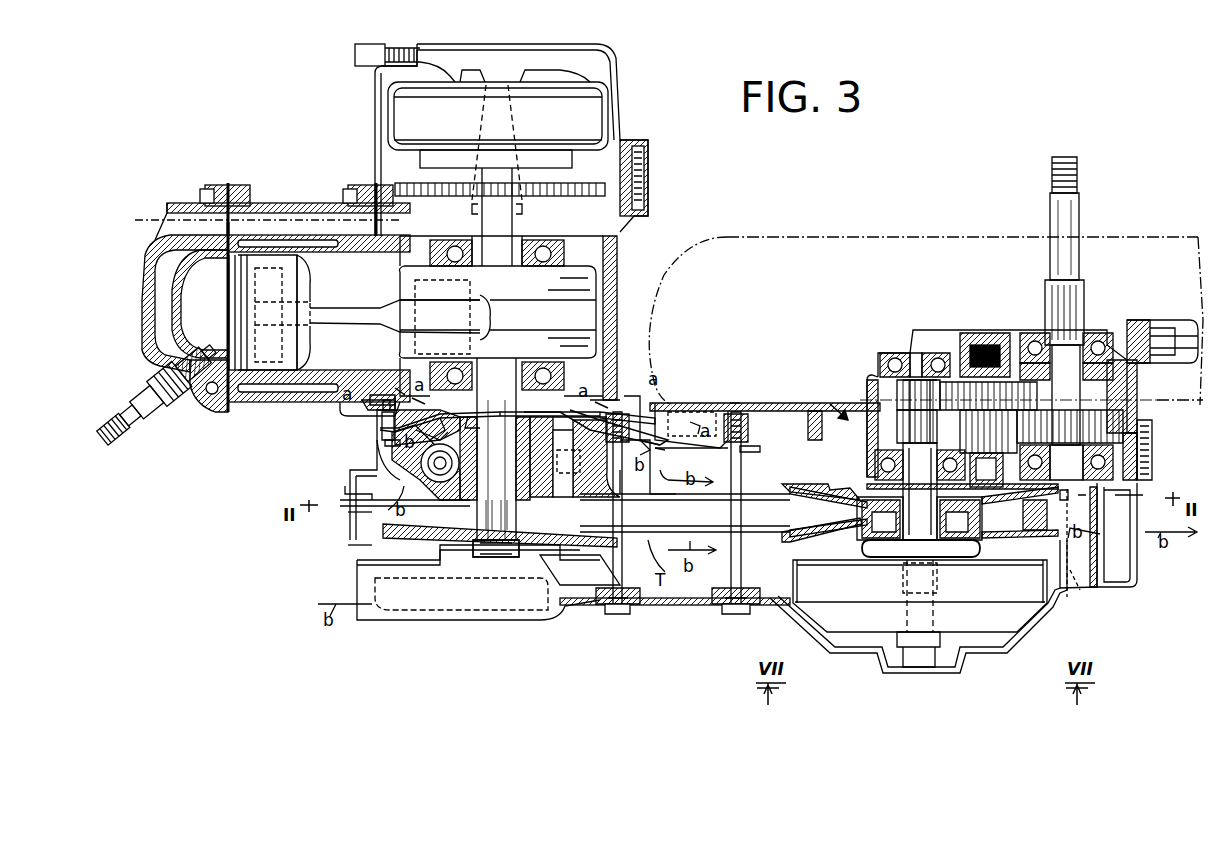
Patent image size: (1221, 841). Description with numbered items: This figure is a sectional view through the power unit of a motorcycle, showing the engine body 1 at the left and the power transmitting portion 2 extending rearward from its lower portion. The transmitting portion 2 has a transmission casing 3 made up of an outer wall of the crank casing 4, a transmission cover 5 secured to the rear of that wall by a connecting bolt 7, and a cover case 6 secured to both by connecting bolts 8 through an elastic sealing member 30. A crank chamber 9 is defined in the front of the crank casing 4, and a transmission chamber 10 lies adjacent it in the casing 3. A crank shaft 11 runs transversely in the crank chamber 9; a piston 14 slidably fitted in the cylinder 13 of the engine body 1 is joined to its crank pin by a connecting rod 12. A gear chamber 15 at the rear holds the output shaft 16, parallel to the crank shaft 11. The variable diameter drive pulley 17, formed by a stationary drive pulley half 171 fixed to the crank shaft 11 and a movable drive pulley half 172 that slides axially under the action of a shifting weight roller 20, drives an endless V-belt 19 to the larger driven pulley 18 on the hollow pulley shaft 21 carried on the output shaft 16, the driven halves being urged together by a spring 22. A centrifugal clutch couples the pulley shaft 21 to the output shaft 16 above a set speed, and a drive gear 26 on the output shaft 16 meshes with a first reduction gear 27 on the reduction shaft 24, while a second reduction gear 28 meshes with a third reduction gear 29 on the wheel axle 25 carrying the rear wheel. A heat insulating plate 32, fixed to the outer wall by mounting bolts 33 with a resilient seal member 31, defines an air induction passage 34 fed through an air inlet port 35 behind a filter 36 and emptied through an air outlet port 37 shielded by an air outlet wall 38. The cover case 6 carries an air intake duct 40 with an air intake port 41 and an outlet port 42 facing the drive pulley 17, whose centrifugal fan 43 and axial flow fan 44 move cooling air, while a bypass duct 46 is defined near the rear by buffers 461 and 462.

The engine body 1 is at (263, 226).
The power transmitting portion 2 is at (740, 392).
The transmission casing 3 is at (672, 606).
The crank casing 4 is at (628, 392).
The transmission cover 5 is at (867, 473).
The cover case 6 is at (1035, 618).
The connecting bolt 7 is at (1145, 478).
The connecting bolts 8 is at (616, 612).
The crank chamber 9 is at (580, 298).
The transmission chamber 10 is at (720, 470).
The crank shaft 11 is at (500, 391).
The connecting rod 12 is at (344, 316).
The cylinder 13 is at (308, 290).
The piston pin 14 is at (305, 344).
The gear chamber 15 is at (956, 425).
The output shaft 16 is at (922, 484).
The variable diameter drive pulley 17 is at (318, 552).
The driven pulley 18 is at (800, 500).
The endless V-belt 19 is at (674, 494).
The shifting weight roller 20 is at (440, 448).
The hollow pulley shaft 21 is at (935, 515).
The spring 22 is at (952, 557).
The reduction shaft 24 is at (994, 476).
The wheel axle 25 is at (1030, 378).
The drive gear 26 is at (900, 412).
The first reduction gear 27 is at (1040, 390).
The second reduction gear 28 is at (975, 436).
The third reduction gear 29 is at (1104, 410).
The elastic sealing member 30 is at (345, 494).
The resilient seal member 31 is at (648, 446).
The heat insulating plate 32 is at (666, 452).
The mounting bolts 33 is at (385, 443).
The air induction passage 34 is at (392, 392).
The air inlet port 35 is at (382, 425).
The filter 36 is at (380, 406).
The air outlet port 37 is at (700, 415).
The air outlet wall 38 is at (672, 405).
The air intake duct 40 is at (400, 622).
The air intake port 41 is at (360, 622).
The outlet port 42 is at (522, 578).
The centrifugal fan 43 is at (585, 562).
The axial flow fan 44 is at (596, 470).
The bypass duct 46 is at (1118, 587).
The stationary drive pulley half 171 is at (372, 545).
The movable drive pulley half 172 is at (372, 512).
The buffer 461 is at (1075, 580).
The buffer 462 is at (1033, 540).